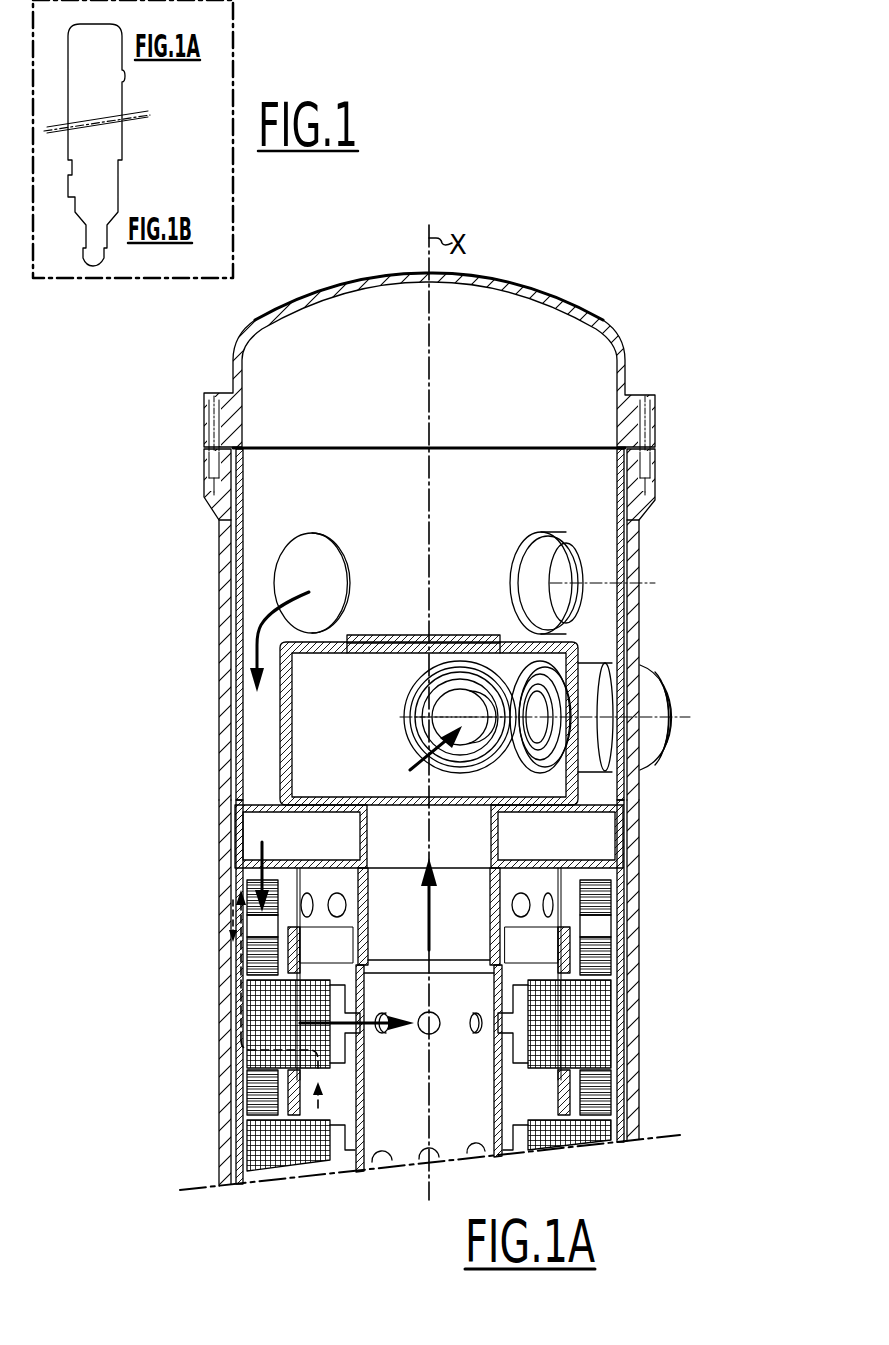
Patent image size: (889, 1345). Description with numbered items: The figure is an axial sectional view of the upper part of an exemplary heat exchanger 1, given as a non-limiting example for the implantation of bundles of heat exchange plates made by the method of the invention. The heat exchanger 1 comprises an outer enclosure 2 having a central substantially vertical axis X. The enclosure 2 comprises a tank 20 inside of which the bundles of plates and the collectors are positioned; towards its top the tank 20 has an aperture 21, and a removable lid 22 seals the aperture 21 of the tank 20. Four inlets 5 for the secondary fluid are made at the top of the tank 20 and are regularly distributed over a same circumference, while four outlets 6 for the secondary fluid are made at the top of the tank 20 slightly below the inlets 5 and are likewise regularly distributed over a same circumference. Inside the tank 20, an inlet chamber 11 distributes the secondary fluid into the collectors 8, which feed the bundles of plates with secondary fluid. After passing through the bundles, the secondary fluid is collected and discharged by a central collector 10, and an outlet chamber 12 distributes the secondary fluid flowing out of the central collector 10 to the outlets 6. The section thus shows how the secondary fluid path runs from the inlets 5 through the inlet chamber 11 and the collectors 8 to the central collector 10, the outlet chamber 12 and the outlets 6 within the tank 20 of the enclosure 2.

The heat exchanger 1 is at (730, 576).
The outer enclosure 2 is at (190, 880).
The inlets for the secondary fluid 5 is at (571, 567).
The outlets for the secondary fluid 6 is at (667, 727).
The collectors for feeding the bundles of plates with secondary fluid 8 is at (605, 926).
The central collector 10 is at (505, 1085).
The inlet chamber 11 is at (617, 652).
The outlet chamber 12 is at (575, 786).
The tank 20 is at (190, 586).
The aperture 21 is at (616, 463).
The removable lid 22 is at (617, 335).